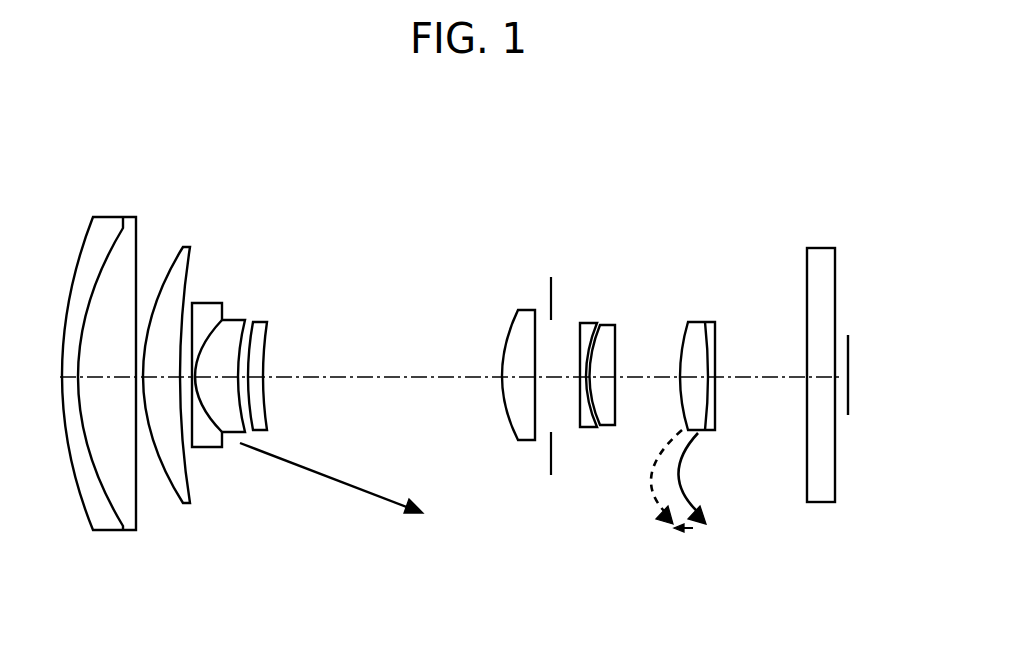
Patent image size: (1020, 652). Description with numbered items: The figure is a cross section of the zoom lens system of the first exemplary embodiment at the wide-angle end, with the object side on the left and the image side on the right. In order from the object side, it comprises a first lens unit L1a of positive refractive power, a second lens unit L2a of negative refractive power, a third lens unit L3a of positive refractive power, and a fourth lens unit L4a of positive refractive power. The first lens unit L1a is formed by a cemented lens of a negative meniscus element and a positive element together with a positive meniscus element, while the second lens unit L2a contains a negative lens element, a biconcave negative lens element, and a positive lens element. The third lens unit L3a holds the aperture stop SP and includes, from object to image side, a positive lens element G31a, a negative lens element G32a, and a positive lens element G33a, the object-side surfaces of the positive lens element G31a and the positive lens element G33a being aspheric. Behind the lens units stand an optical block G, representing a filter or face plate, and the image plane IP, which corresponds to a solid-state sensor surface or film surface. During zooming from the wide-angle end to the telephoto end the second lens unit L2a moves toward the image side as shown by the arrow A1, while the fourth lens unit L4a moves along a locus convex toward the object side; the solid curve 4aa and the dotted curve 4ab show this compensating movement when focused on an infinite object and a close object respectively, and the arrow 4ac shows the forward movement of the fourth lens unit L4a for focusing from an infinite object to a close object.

The first lens unit L1a is at (193, 215).
The second lens unit L2a is at (272, 288).
The third lens unit L3a is at (580, 284).
The fourth lens unit L4a is at (720, 308).
The positive lens element G31a is at (527, 312).
The negative lens element G32a is at (588, 323).
The positive lens element G33a is at (603, 327).
The aperture stop SP is at (552, 450).
The optical block G is at (838, 237).
The image plane IP is at (849, 350).
The arrow A1 is at (331, 478).
The solid curve 4aa is at (683, 482).
The dotted curve 4ab is at (650, 487).
The arrow 4ac is at (688, 528).